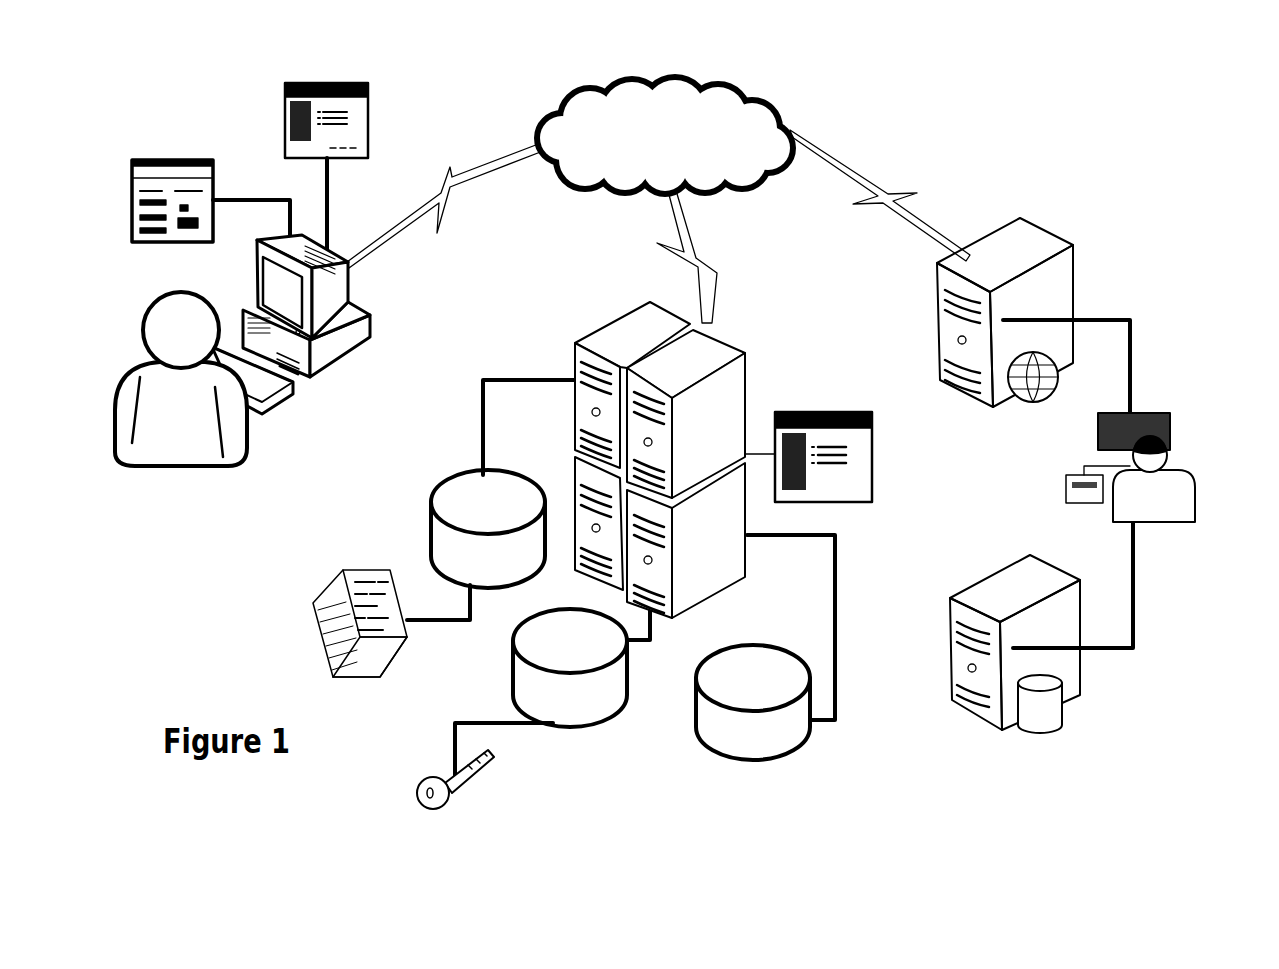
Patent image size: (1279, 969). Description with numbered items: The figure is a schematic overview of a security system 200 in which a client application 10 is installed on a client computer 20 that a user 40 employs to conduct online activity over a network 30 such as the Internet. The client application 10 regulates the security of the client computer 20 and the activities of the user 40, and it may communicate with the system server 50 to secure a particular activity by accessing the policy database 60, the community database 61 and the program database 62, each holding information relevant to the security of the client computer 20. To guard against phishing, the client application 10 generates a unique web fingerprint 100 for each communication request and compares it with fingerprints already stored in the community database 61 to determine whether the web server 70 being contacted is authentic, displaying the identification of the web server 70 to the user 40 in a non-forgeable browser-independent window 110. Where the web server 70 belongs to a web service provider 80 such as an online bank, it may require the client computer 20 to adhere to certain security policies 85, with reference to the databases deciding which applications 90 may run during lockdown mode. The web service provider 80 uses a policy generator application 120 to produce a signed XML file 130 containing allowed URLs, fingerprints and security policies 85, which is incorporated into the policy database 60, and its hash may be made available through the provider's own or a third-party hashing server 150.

The client application 10 is at (286, 72).
The client computer 20 is at (327, 371).
The network 30 is at (712, 115).
The user 40 is at (212, 452).
The system server 50 is at (628, 328).
The policy database 60 is at (433, 553).
The community database 61 is at (583, 707).
The program database 62 is at (767, 733).
The web server 70 is at (1060, 306).
The web service provider 80 is at (1190, 503).
The security policies 85 is at (403, 645).
The applications 90 is at (162, 167).
The web fingerprint 100 is at (470, 772).
The non-forgeable browser-independent window 110 is at (370, 122).
The policy generator application 120 is at (874, 492).
The XML file 130 is at (322, 594).
The hashing server 150 is at (1070, 668).
The security system 200 is at (864, 76).